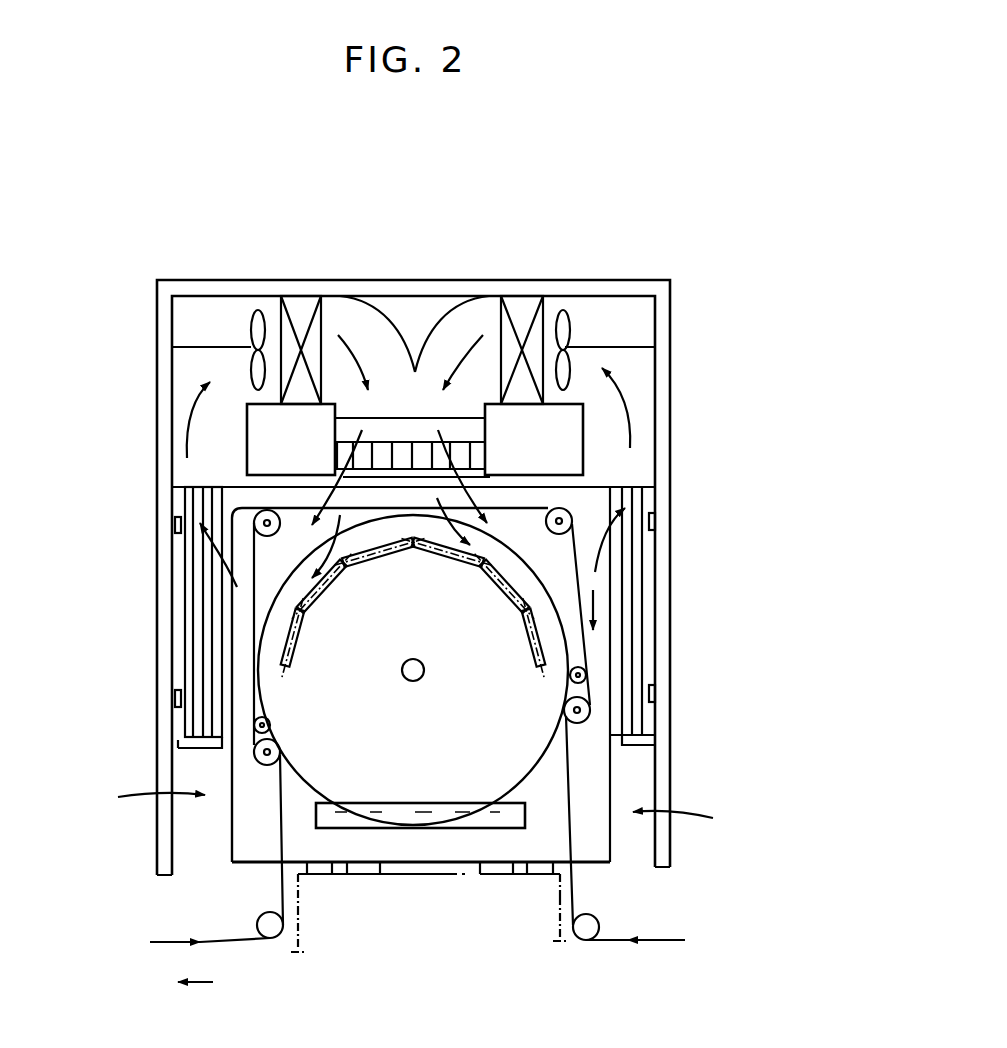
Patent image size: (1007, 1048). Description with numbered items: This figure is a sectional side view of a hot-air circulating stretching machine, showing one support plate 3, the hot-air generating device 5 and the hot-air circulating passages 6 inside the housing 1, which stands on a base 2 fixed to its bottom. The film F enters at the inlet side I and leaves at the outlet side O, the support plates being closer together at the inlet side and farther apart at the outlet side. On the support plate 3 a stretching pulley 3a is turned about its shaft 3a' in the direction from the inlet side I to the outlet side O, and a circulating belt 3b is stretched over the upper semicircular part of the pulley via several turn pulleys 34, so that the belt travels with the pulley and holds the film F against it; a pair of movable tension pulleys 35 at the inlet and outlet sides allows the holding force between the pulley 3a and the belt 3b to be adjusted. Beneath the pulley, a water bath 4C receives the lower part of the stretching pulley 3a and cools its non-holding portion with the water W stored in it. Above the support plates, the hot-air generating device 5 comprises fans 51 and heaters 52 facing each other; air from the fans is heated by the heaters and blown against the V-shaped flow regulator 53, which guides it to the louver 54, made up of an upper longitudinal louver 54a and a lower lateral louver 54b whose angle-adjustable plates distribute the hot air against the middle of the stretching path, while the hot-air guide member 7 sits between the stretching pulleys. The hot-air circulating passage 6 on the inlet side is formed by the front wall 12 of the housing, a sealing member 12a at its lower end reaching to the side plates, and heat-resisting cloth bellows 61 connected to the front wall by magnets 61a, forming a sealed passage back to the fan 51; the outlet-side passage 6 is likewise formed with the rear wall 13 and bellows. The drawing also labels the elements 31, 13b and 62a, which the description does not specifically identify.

The housing 1 is at (644, 262).
The base 2 is at (298, 940).
The support plate 3 is at (235, 866).
The stretching pulley 3a is at (413, 682).
The shaft 3a' is at (451, 665).
The circulating belt 3b is at (527, 510).
The housing bottom wall 31 is at (595, 856).
The turn pulley 34 is at (268, 537).
The tension pulley 35 is at (254, 725).
The water bath 4C is at (485, 820).
The hot-air generating device 5 is at (190, 378).
The fan 51 is at (260, 310).
The heater 52 is at (302, 300).
The flow regulator 53 is at (377, 303).
The louver 54 is at (523, 453).
The upper longitudinal louver 54a is at (473, 430).
The lower lateral louver 54b is at (462, 457).
The hot-air circulating passage 6 is at (187, 623).
The heat-resisting cloth bellows 61 is at (638, 645).
The magnet 61a is at (655, 523).
The louver brackets 62a is at (175, 526).
The hot-air guide member 7 is at (377, 560).
The front wall 12 is at (658, 313).
The sealing member 12a is at (640, 750).
The rear wall 13 is at (158, 322).
The left wall lip 13b is at (178, 757).
The water W is at (352, 823).
The film F is at (650, 942).
The outlet side O is at (145, 808).
The inlet side I is at (687, 831).